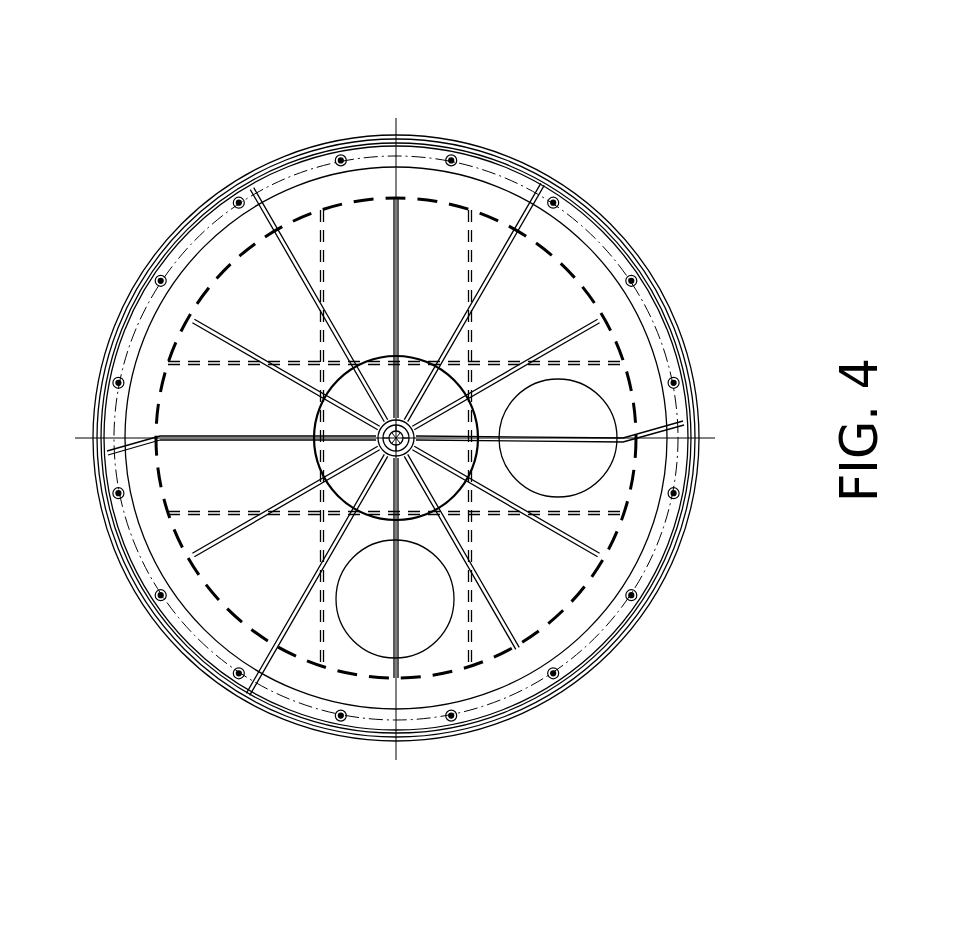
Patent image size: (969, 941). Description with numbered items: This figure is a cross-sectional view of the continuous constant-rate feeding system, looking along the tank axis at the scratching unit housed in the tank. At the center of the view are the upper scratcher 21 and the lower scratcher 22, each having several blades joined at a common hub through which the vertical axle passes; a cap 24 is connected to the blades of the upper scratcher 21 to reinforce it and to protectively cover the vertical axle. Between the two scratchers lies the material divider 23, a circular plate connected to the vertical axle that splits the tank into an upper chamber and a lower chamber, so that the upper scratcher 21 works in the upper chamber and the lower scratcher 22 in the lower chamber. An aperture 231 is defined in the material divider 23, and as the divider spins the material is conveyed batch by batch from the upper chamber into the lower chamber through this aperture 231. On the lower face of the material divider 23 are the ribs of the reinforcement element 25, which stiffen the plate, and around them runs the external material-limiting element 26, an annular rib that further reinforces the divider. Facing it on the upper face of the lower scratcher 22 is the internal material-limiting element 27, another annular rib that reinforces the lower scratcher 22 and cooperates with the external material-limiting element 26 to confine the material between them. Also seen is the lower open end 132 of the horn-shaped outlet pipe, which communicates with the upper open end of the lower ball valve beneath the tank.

The upper scratcher 21 is at (210, 437).
The lower scratcher 22 is at (247, 350).
The material divider 23 is at (557, 285).
The cap 24 is at (396, 265).
The internal material-limiting element 27 is at (396, 438).
The reinforcement element 25 is at (320, 245).
The external material-limiting element 26 is at (487, 213).
The aperture 231 is at (603, 396).
The lower open end 132 is at (403, 660).